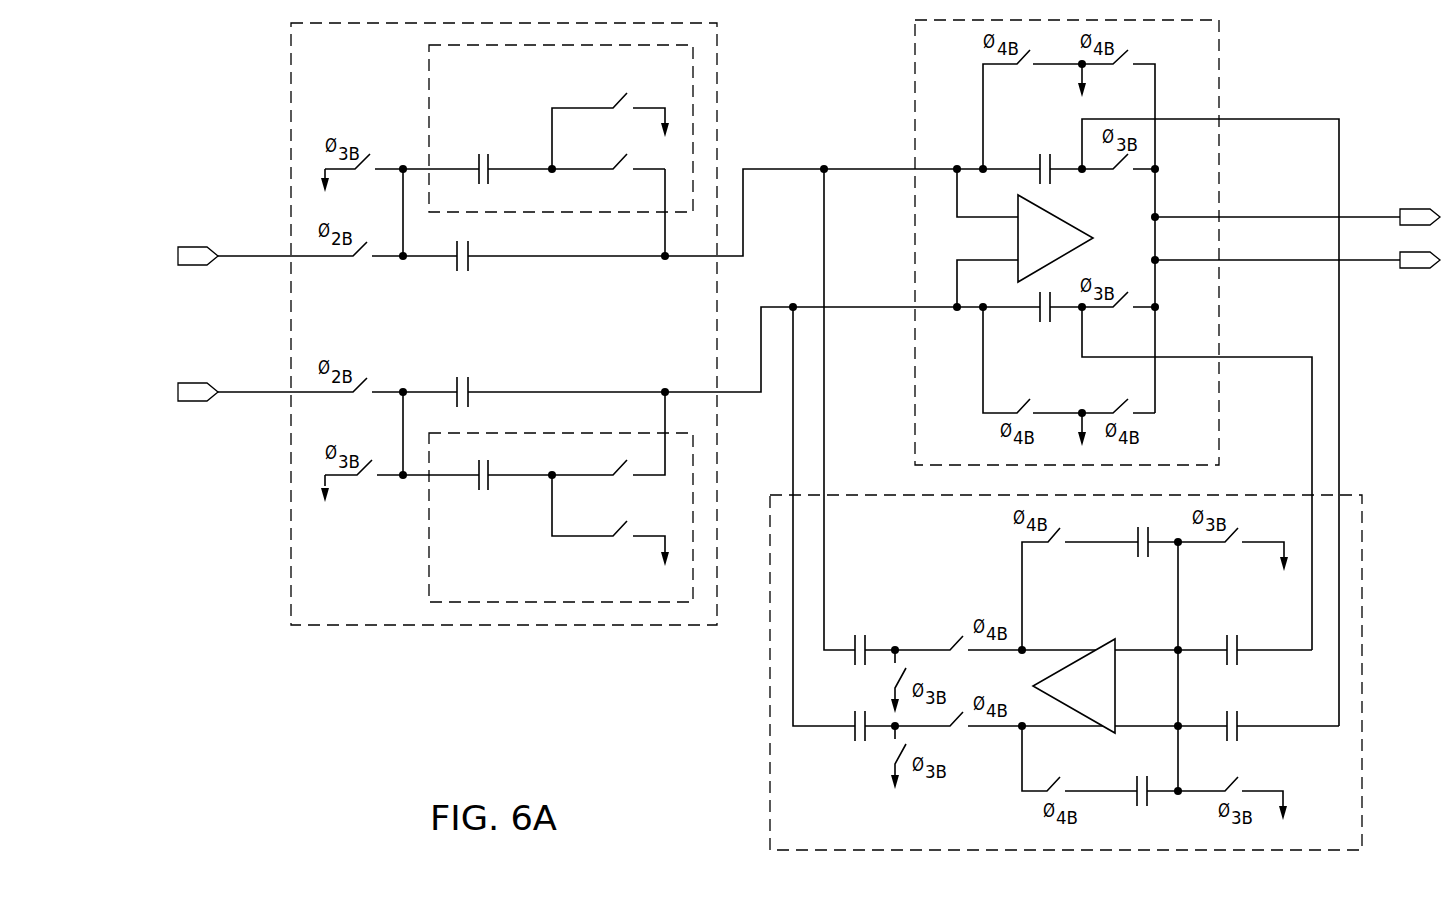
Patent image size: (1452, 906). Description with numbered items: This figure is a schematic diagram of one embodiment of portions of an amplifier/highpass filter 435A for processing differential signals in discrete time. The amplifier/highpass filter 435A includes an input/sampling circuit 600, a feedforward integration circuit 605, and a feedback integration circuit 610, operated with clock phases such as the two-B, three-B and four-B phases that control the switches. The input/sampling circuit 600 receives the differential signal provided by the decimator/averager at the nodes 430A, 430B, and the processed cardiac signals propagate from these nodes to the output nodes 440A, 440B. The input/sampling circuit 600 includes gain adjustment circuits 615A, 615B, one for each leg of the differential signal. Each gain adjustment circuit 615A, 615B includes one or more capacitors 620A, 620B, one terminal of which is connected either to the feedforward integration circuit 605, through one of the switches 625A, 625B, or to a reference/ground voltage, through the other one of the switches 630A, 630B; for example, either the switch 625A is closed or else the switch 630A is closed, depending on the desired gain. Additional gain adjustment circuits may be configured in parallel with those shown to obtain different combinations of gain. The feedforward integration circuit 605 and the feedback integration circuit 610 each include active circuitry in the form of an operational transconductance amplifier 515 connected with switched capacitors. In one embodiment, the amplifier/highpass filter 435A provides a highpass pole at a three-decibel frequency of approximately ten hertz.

The input/sampling circuit 600 is at (718, 60).
The feedforward integration circuit 605 is at (1220, 65).
The feedback integration circuit 610 is at (1364, 557).
The gain adjustment circuit 615A is at (428, 72).
The gain adjustment circuit 615B is at (428, 576).
The capacitor 620A is at (489, 165).
The capacitor 620B is at (490, 485).
The switch 625A is at (619, 165).
The switch 625B is at (619, 532).
The switch 630A is at (619, 105).
The switch 630B is at (619, 472).
The node 430A is at (246, 253).
The node 430B is at (252, 396).
The node 440A is at (1367, 216).
The node 440B is at (1368, 265).
The operational transconductance amplifier (OTA) 515 is at (1017, 238).
The amplifier/highpass filter 435A is at (313, 776).